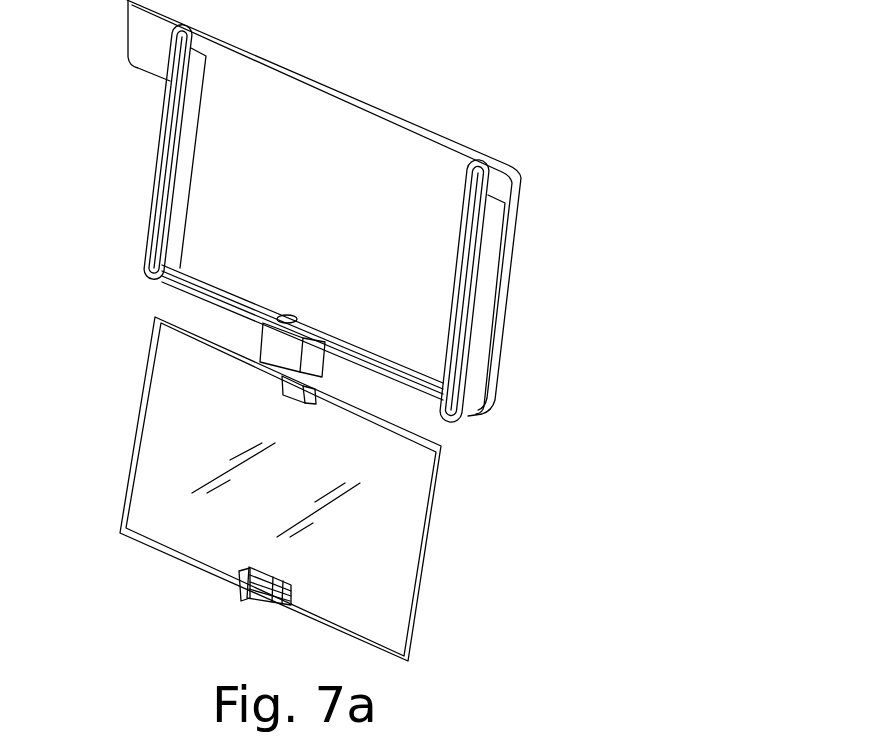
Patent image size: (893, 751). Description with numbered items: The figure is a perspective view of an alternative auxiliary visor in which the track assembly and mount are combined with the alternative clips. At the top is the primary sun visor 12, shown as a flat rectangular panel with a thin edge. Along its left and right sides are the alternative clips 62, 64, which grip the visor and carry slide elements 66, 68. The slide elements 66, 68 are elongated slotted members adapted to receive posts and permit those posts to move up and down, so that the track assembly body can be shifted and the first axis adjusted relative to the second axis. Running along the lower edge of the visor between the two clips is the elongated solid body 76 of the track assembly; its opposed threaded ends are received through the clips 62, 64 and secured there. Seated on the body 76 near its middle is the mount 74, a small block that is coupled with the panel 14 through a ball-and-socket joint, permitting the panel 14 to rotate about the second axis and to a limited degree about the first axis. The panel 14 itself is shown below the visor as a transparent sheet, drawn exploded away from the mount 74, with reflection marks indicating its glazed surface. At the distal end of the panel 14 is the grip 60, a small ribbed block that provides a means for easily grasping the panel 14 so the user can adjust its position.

The primary sun visor 12 is at (327, 204).
The panel 14 is at (398, 555).
The grip 60 is at (247, 593).
The clip 62 is at (137, 130).
The clip 64 is at (522, 247).
The slide element 66 is at (152, 196).
The slide element 68 is at (460, 284).
The mount 74 is at (315, 368).
The elongated solid body 76 is at (187, 285).